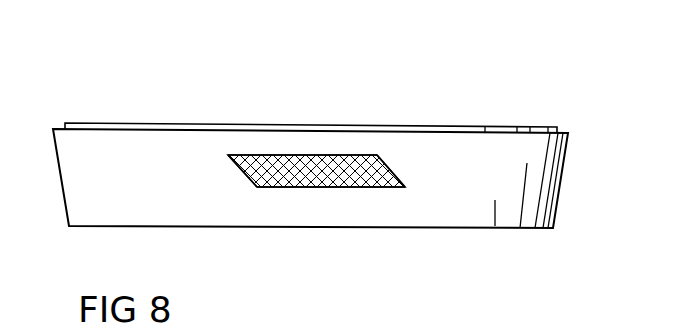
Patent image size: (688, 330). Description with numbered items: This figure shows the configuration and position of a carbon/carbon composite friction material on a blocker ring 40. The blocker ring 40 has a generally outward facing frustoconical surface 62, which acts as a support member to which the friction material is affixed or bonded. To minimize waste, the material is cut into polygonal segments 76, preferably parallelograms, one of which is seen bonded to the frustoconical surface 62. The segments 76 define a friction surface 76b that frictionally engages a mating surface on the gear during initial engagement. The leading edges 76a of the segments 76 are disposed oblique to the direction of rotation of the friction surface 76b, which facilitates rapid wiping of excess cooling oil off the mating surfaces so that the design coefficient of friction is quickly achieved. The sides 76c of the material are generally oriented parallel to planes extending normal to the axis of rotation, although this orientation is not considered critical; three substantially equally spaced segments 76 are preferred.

The blocker ring 40 is at (525, 228).
The frustoconical surface 62 is at (522, 150).
The polygonal segment 76 is at (322, 200).
The leading edge 76a is at (238, 174).
The friction surface 76b is at (278, 155).
The side 76c is at (393, 180).